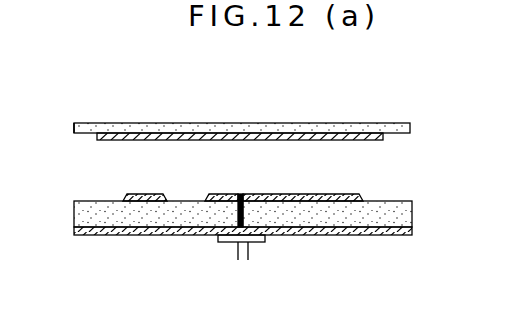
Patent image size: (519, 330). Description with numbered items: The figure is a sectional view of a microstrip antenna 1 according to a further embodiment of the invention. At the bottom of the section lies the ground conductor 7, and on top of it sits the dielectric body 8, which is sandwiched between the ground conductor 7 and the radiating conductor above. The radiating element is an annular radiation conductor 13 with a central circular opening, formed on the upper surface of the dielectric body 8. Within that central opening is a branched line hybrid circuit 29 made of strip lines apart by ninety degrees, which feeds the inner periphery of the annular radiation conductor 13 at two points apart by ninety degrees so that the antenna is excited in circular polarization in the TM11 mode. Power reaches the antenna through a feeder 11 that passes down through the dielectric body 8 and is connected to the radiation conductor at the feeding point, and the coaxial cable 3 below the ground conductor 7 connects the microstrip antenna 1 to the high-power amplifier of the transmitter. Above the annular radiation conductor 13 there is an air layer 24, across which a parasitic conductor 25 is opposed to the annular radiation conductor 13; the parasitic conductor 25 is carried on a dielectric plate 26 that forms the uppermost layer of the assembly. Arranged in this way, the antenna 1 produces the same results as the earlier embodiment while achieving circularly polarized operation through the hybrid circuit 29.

The microstrip antenna 1 is at (129, 120).
The dielectric plate 26 is at (74, 127).
The parasitic conductor 25 is at (100, 140).
The air layer 24 is at (370, 163).
The annular radiation conductor 13 is at (123, 195).
The dielectric body 8 is at (405, 213).
The ground conductor 7 is at (358, 230).
The feeder 11 is at (238, 210).
The branched line hybrid circuit 29 is at (288, 203).
The coaxial cable 3 is at (249, 250).